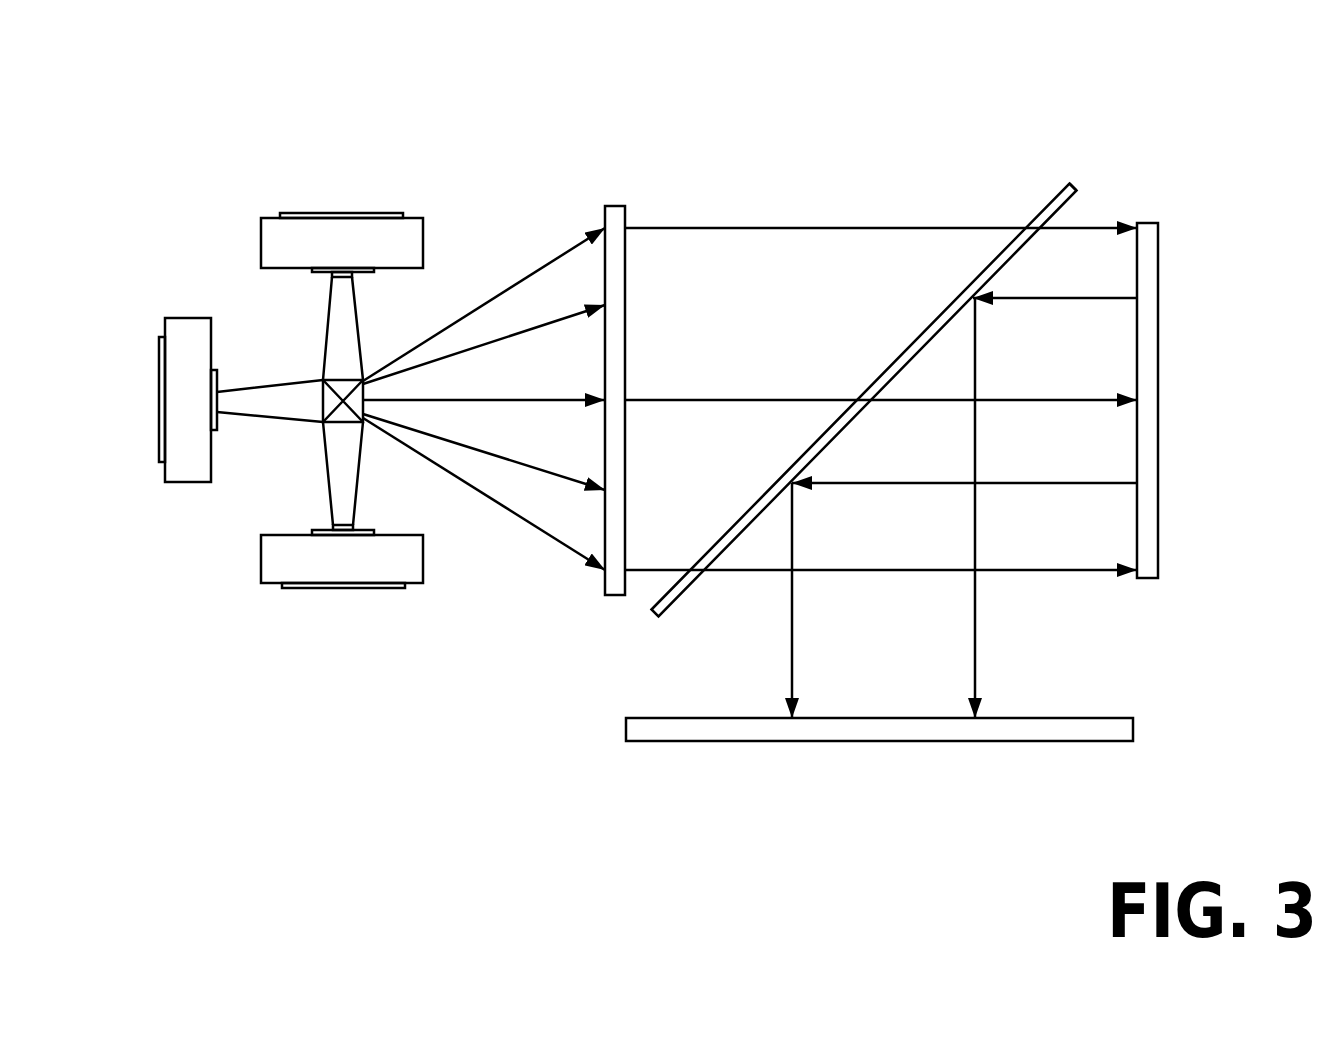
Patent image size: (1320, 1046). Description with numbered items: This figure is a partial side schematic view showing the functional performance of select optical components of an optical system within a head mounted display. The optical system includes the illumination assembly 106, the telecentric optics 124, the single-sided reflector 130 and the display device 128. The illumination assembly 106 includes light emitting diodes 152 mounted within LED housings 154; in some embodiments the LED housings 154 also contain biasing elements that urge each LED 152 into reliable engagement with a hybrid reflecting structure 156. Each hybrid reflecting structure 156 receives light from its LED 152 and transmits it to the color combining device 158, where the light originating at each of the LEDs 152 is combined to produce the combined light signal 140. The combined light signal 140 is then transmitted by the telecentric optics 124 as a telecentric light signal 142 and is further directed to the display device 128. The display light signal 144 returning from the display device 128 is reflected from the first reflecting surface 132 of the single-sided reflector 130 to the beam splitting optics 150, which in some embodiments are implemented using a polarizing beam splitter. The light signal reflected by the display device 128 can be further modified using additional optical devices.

The illumination assembly 106 is at (415, 138).
The telecentric optics 124 is at (614, 215).
The display device 128 is at (1148, 338).
The single-sided reflector 130 is at (1047, 207).
The first reflecting surface 132 is at (1078, 193).
The combined light signal 140 is at (522, 277).
The collimated light 142 is at (870, 227).
The display light signal 144 is at (975, 625).
The beam splitting optics 150 is at (1128, 727).
The light emitting diodes 152 is at (328, 276).
The LED housings 154 is at (425, 552).
The hybrid reflecting structure 156 is at (350, 327).
The color combining device 158 is at (323, 422).